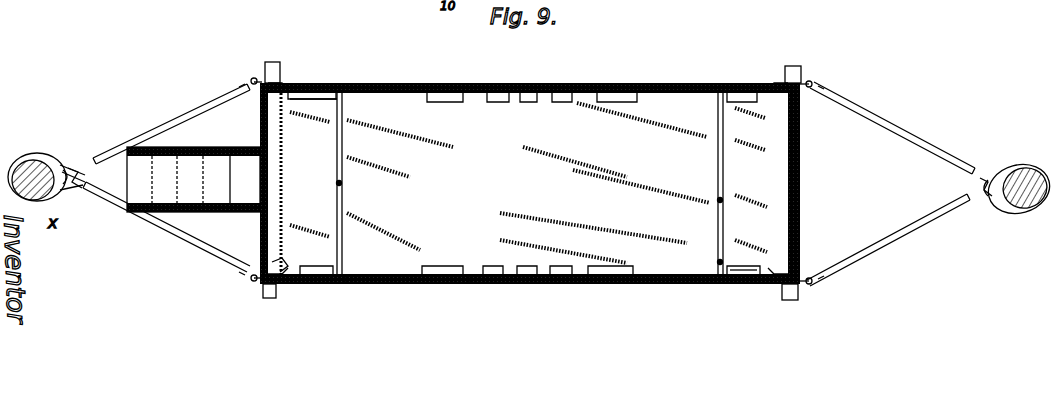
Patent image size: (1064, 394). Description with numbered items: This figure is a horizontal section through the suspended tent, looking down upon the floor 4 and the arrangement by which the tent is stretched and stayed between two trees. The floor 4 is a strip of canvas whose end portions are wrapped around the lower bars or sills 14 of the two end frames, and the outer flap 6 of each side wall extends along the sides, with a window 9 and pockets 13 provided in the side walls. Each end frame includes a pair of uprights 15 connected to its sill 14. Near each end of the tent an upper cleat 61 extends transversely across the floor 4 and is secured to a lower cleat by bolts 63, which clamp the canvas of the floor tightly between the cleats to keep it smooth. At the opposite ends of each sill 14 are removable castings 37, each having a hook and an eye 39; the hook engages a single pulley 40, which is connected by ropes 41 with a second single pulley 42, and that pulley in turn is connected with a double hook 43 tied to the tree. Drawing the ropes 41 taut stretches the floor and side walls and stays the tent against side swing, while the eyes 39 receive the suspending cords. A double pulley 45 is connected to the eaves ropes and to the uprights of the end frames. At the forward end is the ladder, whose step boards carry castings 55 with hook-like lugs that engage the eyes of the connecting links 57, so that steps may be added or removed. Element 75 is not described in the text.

The floor 4 is at (478, 254).
The outer flap 6 is at (355, 273).
The window 9 is at (382, 276).
The pocket 13 is at (560, 102).
The lower bar or sill 14 is at (272, 62).
The upright 15 is at (276, 98).
The removable ring or casting 37 is at (282, 81).
The eye 39 is at (254, 77).
The single pulley 40 is at (246, 82).
The rope or cord 41 is at (190, 110).
The single pulley 42 is at (88, 170).
The double hook 43 is at (68, 170).
The double pulley 45 is at (280, 266).
The casting 55 is at (210, 162).
The connecting link 57 is at (222, 162).
The upper cleat 61 is at (344, 203).
The bolt 63 is at (343, 184).
The wall 75 is at (410, 277).